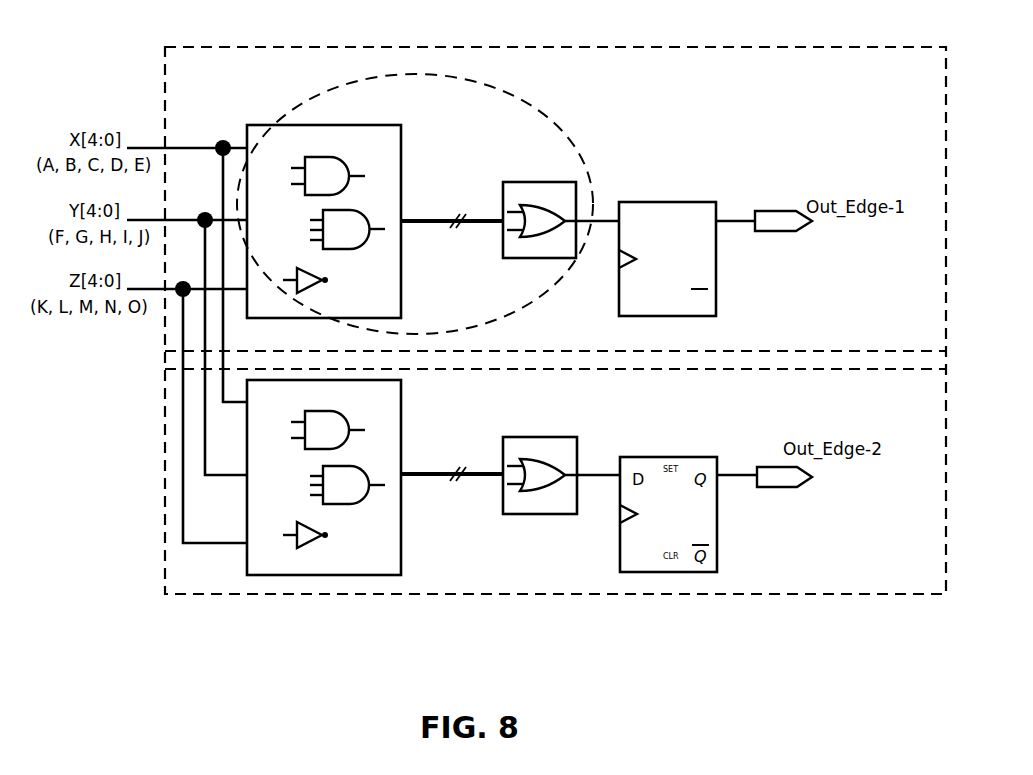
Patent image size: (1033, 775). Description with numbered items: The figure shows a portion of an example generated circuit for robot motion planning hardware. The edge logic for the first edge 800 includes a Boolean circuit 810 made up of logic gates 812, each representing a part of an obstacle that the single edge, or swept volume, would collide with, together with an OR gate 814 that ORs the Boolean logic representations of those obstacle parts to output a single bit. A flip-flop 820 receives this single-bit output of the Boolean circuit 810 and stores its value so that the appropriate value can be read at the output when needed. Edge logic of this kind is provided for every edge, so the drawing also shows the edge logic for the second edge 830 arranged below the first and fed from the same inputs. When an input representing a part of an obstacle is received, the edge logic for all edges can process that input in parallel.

The edge logic for Edge-1 800 is at (327, 47).
The Boolean circuit 810 is at (552, 117).
The logic gates 812 is at (383, 125).
The OR gate 814 is at (514, 182).
The flip-flop 820 is at (690, 202).
The edge logic for Edge-2 830 is at (257, 596).